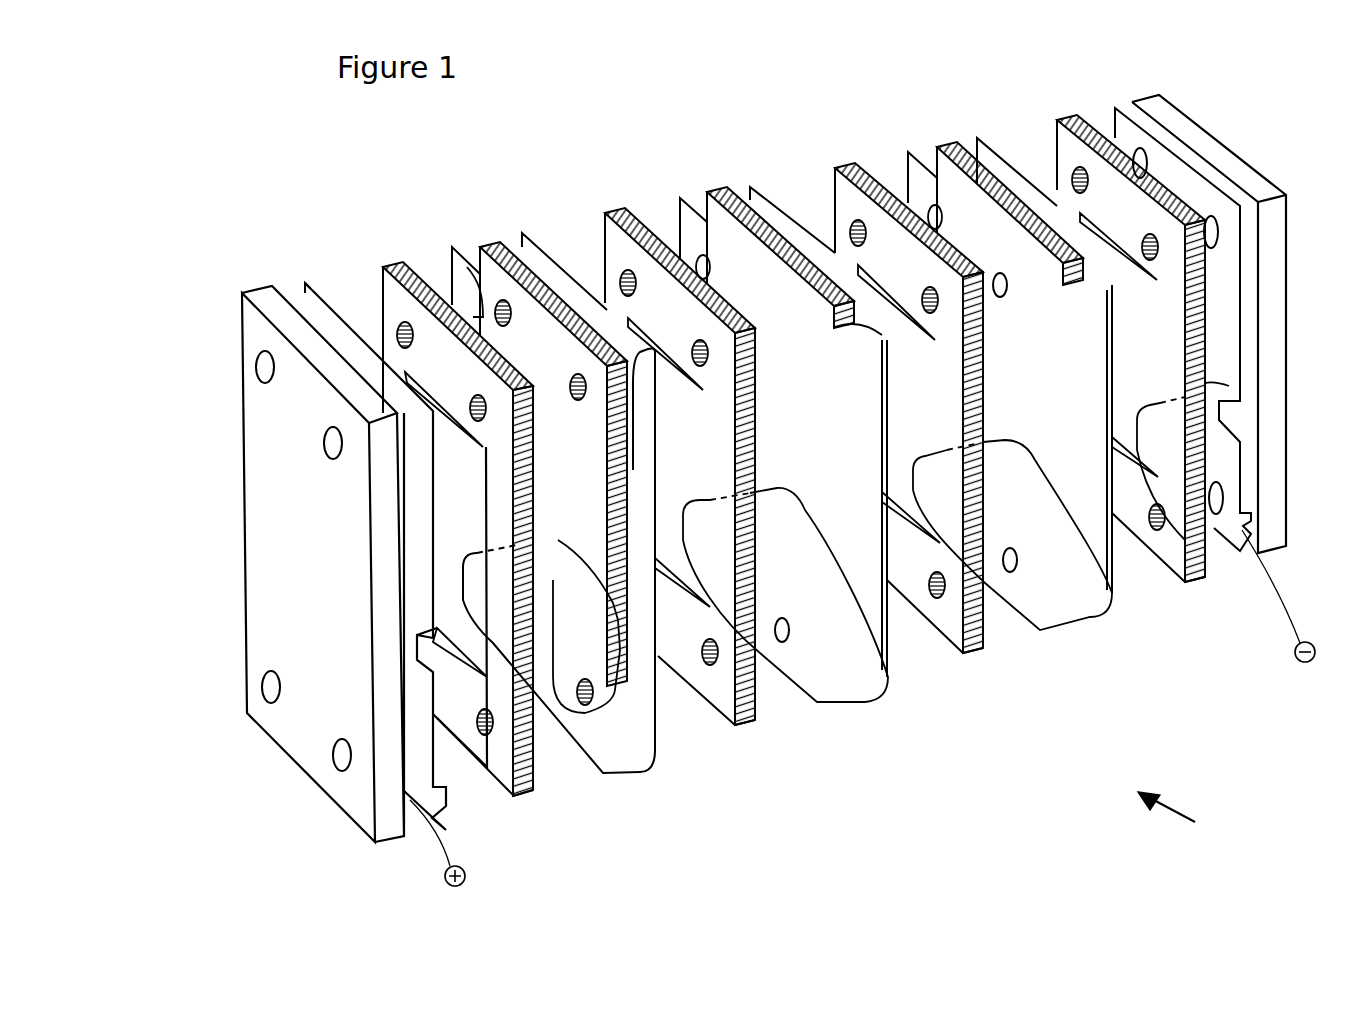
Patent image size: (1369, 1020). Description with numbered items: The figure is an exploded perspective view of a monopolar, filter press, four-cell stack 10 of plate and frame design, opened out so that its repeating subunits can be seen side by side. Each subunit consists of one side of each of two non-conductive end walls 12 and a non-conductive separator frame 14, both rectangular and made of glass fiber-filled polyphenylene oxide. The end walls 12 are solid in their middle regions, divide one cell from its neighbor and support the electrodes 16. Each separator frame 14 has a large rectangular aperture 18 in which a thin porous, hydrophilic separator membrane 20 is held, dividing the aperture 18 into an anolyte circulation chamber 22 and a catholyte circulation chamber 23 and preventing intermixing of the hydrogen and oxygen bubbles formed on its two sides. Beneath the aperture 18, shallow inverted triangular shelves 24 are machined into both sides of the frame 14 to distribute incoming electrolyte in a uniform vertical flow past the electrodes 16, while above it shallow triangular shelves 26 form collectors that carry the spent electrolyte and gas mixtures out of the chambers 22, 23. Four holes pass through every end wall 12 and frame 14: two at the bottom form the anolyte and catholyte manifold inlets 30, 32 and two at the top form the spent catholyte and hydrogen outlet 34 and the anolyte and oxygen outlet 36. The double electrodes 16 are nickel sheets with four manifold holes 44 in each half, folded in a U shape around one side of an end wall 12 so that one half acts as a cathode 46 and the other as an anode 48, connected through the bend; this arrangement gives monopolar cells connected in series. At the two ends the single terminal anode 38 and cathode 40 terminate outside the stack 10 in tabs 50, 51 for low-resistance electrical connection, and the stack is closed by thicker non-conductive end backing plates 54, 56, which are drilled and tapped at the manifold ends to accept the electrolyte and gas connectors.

The cell stack 10 is at (1178, 817).
The end wall 12 is at (485, 243).
The separator frame 14 is at (384, 265).
The electrode 16 is at (655, 760).
The aperture 18 is at (540, 785).
The separator membrane 20 is at (500, 790).
The anolyte circulation chamber 22 is at (608, 742).
The catholyte circulation chamber 23 is at (643, 740).
The inverted triangular shelves 24 is at (468, 632).
The triangular shelves 26 is at (398, 332).
The anolyte manifold inlet 30 is at (337, 763).
The catholyte manifold inlet 32 is at (262, 688).
The spent catholyte and hydrogen gas manifold outlet 34 is at (324, 445).
The anolyte and oxygen gas manifold outlet 36 is at (256, 368).
The anode 38 is at (300, 288).
The cathode 40 is at (1116, 105).
The manifold holes 44 is at (678, 243).
The cathode 46 is at (460, 262).
The anode 48 is at (535, 240).
The tab 50 is at (440, 805).
The tab 51 is at (1248, 538).
The end backing plate 54 is at (258, 292).
The end backing plate 56 is at (1158, 103).